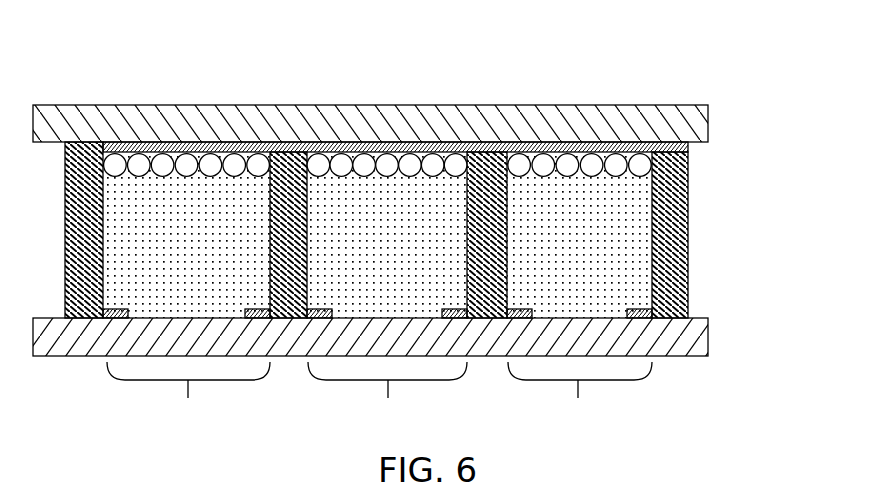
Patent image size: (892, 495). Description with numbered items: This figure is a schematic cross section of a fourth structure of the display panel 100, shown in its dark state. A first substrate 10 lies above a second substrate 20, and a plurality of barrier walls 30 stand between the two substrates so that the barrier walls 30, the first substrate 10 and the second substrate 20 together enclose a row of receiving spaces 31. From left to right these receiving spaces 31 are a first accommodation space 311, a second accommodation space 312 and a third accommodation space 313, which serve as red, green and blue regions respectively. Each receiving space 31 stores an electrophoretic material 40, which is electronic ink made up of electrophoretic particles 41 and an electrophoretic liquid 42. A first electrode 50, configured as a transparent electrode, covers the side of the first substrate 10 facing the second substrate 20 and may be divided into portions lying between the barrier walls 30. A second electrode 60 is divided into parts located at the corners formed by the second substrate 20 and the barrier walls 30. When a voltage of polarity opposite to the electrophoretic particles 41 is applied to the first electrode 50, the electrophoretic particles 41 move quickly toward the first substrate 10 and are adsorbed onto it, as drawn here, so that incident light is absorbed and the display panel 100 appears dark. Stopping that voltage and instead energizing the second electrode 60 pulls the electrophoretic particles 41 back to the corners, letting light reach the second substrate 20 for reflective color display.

The display panel 100 is at (661, 56).
The first substrate 10 is at (675, 125).
The second substrate 20 is at (680, 343).
The barrier walls 30 is at (672, 204).
The first electrode 50 is at (690, 147).
The electrophoretic material 40 is at (760, 213).
The electrophoretic particles 41 is at (668, 210).
The electrophoretic liquid 42 is at (602, 255).
The receiving spaces 31 is at (598, 287).
The first accommodation spaces 311 is at (188, 396).
The second accommodation spaces 312 is at (387, 396).
The third accommodation spaces 313 is at (580, 396).
The second electrode 60 is at (667, 307).